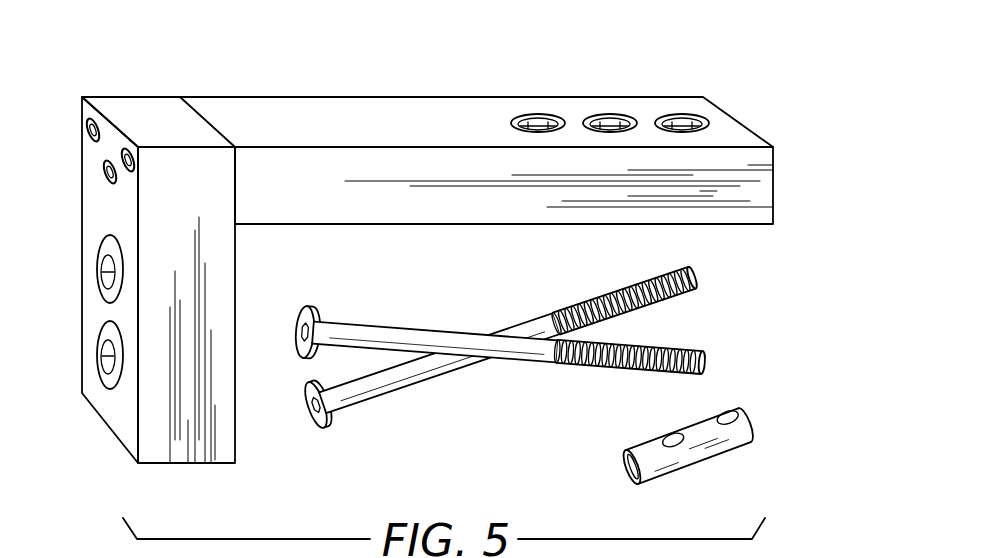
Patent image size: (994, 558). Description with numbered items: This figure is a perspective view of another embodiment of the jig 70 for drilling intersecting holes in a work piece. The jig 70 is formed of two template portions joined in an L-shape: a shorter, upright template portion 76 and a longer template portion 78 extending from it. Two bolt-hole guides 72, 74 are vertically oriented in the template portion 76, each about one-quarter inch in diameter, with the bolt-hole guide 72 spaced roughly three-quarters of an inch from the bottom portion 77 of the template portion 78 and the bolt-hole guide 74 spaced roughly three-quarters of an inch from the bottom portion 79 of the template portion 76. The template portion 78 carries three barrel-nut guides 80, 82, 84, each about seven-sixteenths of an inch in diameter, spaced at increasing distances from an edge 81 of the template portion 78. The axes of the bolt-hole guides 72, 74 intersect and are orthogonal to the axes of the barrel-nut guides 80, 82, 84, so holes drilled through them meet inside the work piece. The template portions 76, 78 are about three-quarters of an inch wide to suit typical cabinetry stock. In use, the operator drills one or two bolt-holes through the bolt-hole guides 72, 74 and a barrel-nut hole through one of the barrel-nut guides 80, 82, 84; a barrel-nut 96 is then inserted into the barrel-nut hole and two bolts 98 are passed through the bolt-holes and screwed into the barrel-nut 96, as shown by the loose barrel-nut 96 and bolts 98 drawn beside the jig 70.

The jig 70 is at (399, 263).
The bolt-hole guide 72 is at (110, 272).
The bolt-hole guide 74 is at (110, 355).
The template portion 76 is at (82, 280).
The bottom portion 77 is at (267, 226).
The template portion 78 is at (427, 93).
The bottom portion 79 is at (203, 463).
The barrel-nut guide 80 is at (540, 122).
The edge 81 is at (208, 122).
The barrel-nut guide 82 is at (611, 122).
The barrel-nut guide 84 is at (685, 122).
The barrel-nut 96 is at (708, 440).
The bolts 98 is at (420, 340).